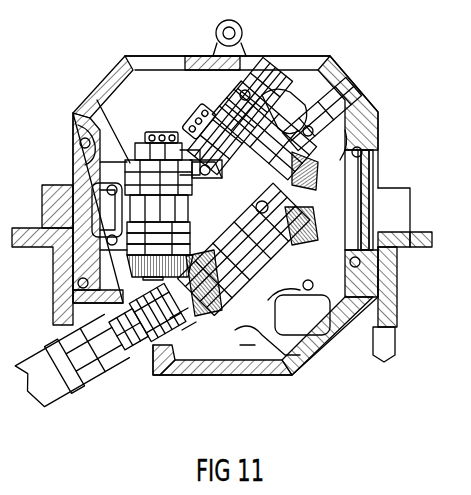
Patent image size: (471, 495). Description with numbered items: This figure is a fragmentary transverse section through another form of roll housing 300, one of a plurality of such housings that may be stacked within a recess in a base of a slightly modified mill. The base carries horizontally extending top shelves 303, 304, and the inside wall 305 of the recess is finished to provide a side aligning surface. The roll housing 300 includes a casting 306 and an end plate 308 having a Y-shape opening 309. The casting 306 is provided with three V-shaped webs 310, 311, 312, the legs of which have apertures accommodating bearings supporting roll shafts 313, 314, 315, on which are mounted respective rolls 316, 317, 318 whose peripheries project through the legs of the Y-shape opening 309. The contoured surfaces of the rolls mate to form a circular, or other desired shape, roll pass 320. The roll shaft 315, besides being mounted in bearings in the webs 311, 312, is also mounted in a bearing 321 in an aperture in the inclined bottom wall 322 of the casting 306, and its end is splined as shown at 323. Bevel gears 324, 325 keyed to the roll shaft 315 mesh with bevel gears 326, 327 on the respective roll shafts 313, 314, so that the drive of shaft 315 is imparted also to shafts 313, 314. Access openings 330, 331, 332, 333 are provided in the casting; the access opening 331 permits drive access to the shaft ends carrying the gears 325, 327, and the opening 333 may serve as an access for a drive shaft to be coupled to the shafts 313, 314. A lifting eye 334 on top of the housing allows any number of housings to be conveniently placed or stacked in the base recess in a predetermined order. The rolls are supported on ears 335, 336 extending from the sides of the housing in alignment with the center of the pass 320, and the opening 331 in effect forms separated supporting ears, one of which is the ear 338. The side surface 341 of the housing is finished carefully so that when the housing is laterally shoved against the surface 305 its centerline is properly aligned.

The roll housing 300 is at (360, 88).
The top shelf 303 is at (41, 248).
The top shelf 304 is at (422, 249).
The inside wall 305 is at (385, 333).
The casting 306 is at (222, 376).
The end plate 308 is at (164, 72).
The Y-shape opening 309 is at (299, 318).
The V-shaped web 310 is at (127, 160).
The V-shaped web 311 is at (314, 132).
The V-shaped web 312 is at (243, 350).
The roll shaft 313 is at (165, 131).
The roll shaft 314 is at (197, 104).
The roll shaft 315 is at (183, 320).
The roll 316 is at (92, 190).
The roll 317 is at (264, 125).
The roll 318 is at (314, 285).
The roll pass 320 is at (256, 207).
The bearing 321 is at (143, 350).
The inclined bottom wall 322 is at (152, 358).
The splined end 323 is at (106, 388).
The bevel gear 324 is at (188, 283).
The bevel gear 325 is at (315, 226).
The bevel gear 326 is at (130, 262).
The bevel gear 327 is at (318, 181).
The access opening 330 is at (310, 357).
The access opening 331 is at (377, 184).
The access opening 332 is at (328, 67).
The access opening 333 is at (118, 70).
The lifting eye 334 is at (243, 33).
The ear 335 is at (45, 206).
The ear 336 is at (422, 207).
The supporting ear 338 is at (412, 223).
The side surface 341 is at (397, 290).